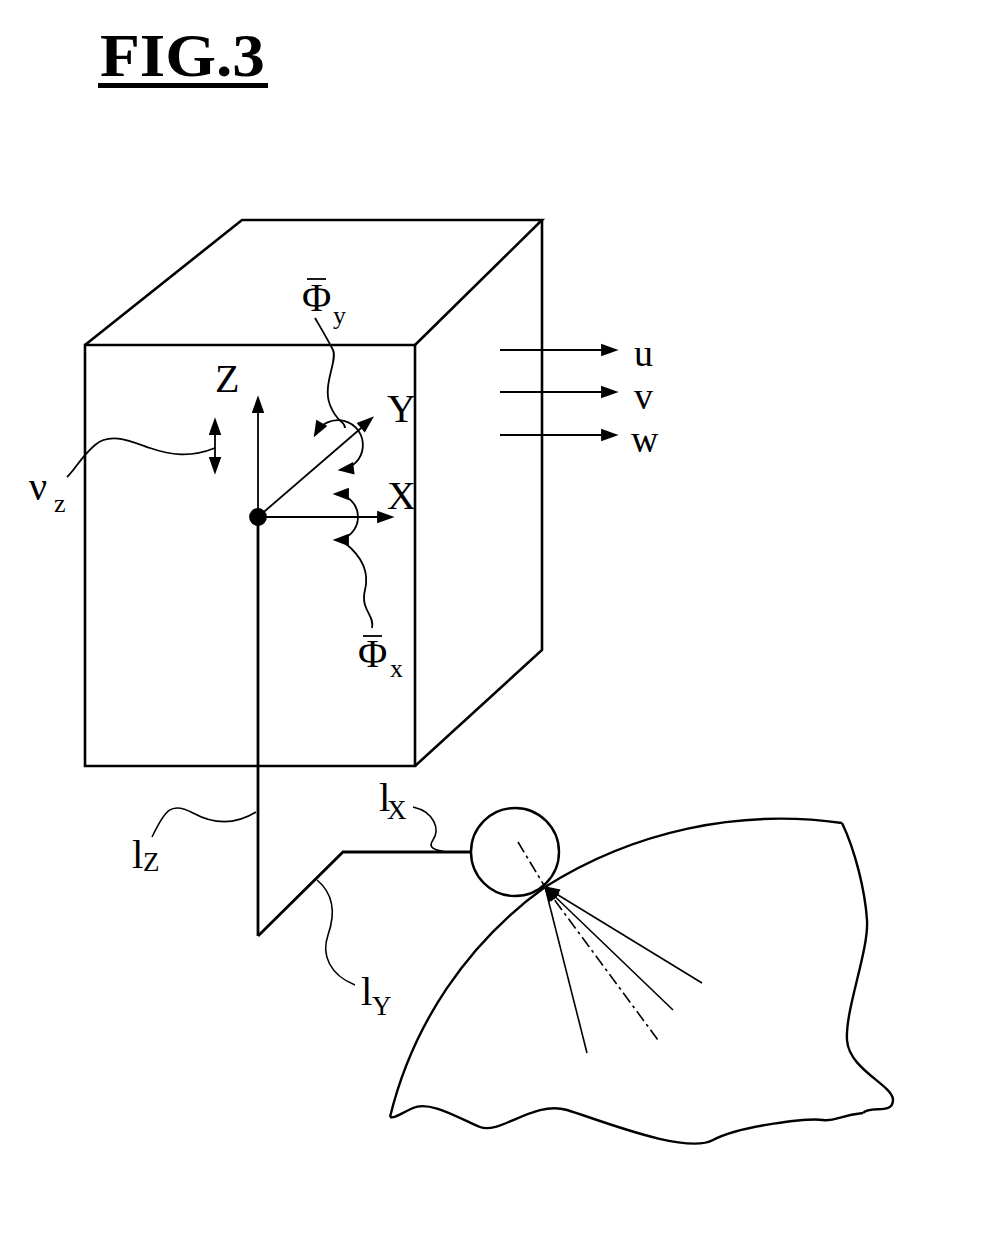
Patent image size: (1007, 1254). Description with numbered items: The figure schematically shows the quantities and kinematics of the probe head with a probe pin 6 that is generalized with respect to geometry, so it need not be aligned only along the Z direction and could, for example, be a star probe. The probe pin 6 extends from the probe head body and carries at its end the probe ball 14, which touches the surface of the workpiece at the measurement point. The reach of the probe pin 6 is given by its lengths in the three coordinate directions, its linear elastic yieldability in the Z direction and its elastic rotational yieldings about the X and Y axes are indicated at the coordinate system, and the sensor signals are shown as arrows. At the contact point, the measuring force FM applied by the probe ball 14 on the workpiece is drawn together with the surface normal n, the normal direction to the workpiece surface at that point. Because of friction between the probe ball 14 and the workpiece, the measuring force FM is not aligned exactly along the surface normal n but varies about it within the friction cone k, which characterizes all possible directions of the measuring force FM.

The probe pin 6 is at (258, 896).
The probe ball 14 is at (507, 885).
The friction cone k is at (673, 962).
The surface normal n is at (650, 1013).
The measuring force FM is at (620, 953).